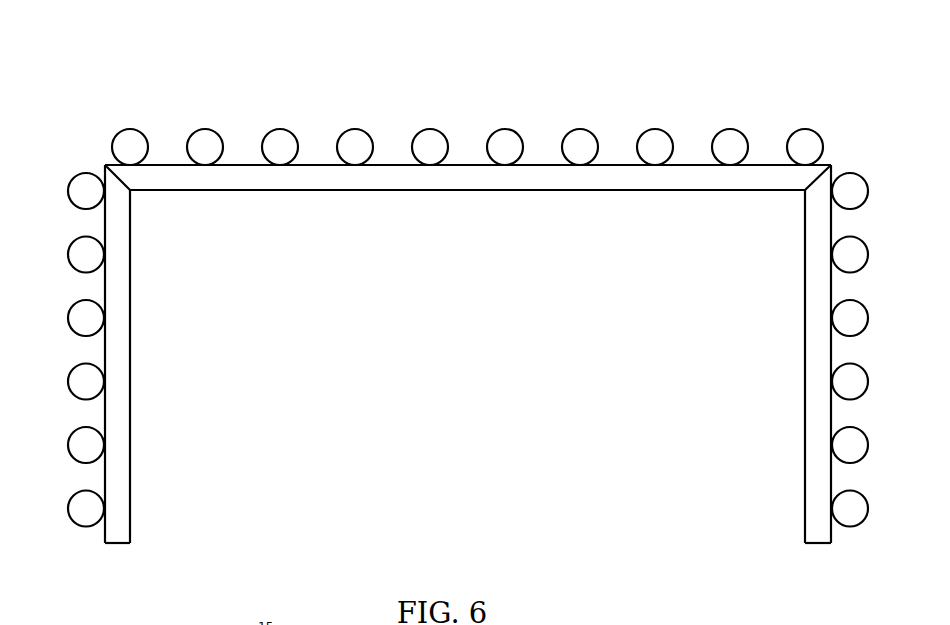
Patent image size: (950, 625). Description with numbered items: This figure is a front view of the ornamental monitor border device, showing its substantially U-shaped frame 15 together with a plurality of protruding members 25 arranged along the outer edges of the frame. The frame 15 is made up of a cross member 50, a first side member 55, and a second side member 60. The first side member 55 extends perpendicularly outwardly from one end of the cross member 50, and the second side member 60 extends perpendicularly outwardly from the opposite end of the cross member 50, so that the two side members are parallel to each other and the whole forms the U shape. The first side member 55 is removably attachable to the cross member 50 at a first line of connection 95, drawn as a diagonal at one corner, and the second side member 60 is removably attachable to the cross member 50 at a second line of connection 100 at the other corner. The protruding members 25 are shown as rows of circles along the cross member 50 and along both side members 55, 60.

The substantially U-shaped frame 15 is at (306, 92).
The protruding members 25 is at (588, 137).
The cross member 50 is at (469, 175).
The first side member 55 is at (118, 349).
The second side member 60 is at (822, 352).
The first line of connection 95 is at (110, 170).
The second line of connection 100 is at (812, 184).